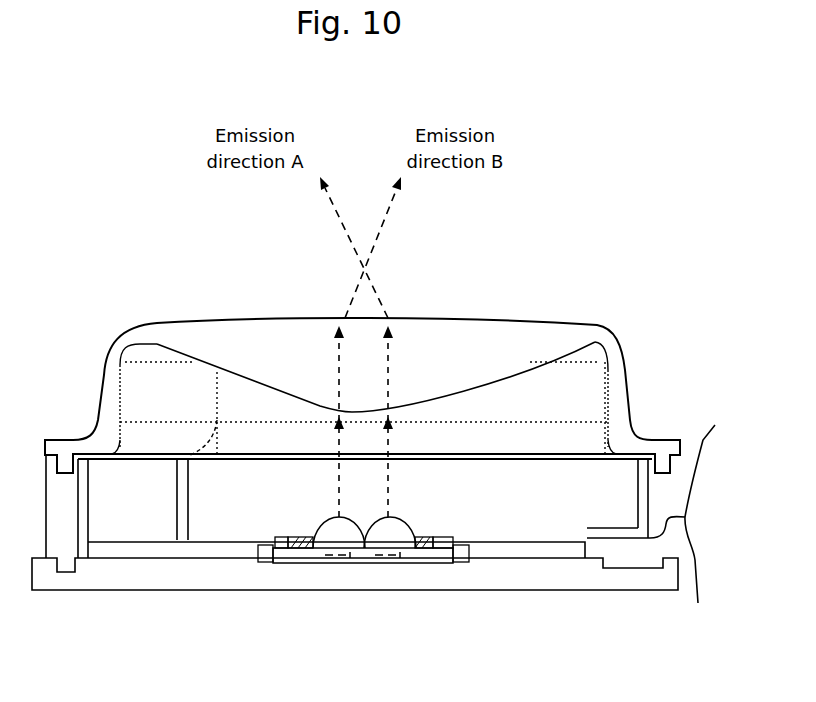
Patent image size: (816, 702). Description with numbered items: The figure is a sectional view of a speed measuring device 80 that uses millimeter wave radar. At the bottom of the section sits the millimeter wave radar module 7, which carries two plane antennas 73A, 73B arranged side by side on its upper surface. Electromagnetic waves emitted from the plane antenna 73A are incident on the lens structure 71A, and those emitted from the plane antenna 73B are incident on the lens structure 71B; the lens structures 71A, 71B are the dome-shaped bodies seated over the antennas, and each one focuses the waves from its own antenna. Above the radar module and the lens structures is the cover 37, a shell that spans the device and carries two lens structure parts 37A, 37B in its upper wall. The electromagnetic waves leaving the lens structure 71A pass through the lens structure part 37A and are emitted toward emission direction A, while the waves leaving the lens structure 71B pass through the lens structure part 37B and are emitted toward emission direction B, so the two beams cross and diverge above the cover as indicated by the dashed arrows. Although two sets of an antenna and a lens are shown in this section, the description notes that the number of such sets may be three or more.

The speed measuring device 80 is at (63, 124).
The cover 37 is at (597, 330).
The lens structure part 37A is at (402, 320).
The lens structure part 37B is at (292, 399).
The millimeter wave radar module 7 is at (287, 563).
The lens structure 71A is at (330, 535).
The lens structure 71B is at (397, 535).
The plane antenna 73A is at (337, 563).
The plane antenna 73B is at (390, 563).